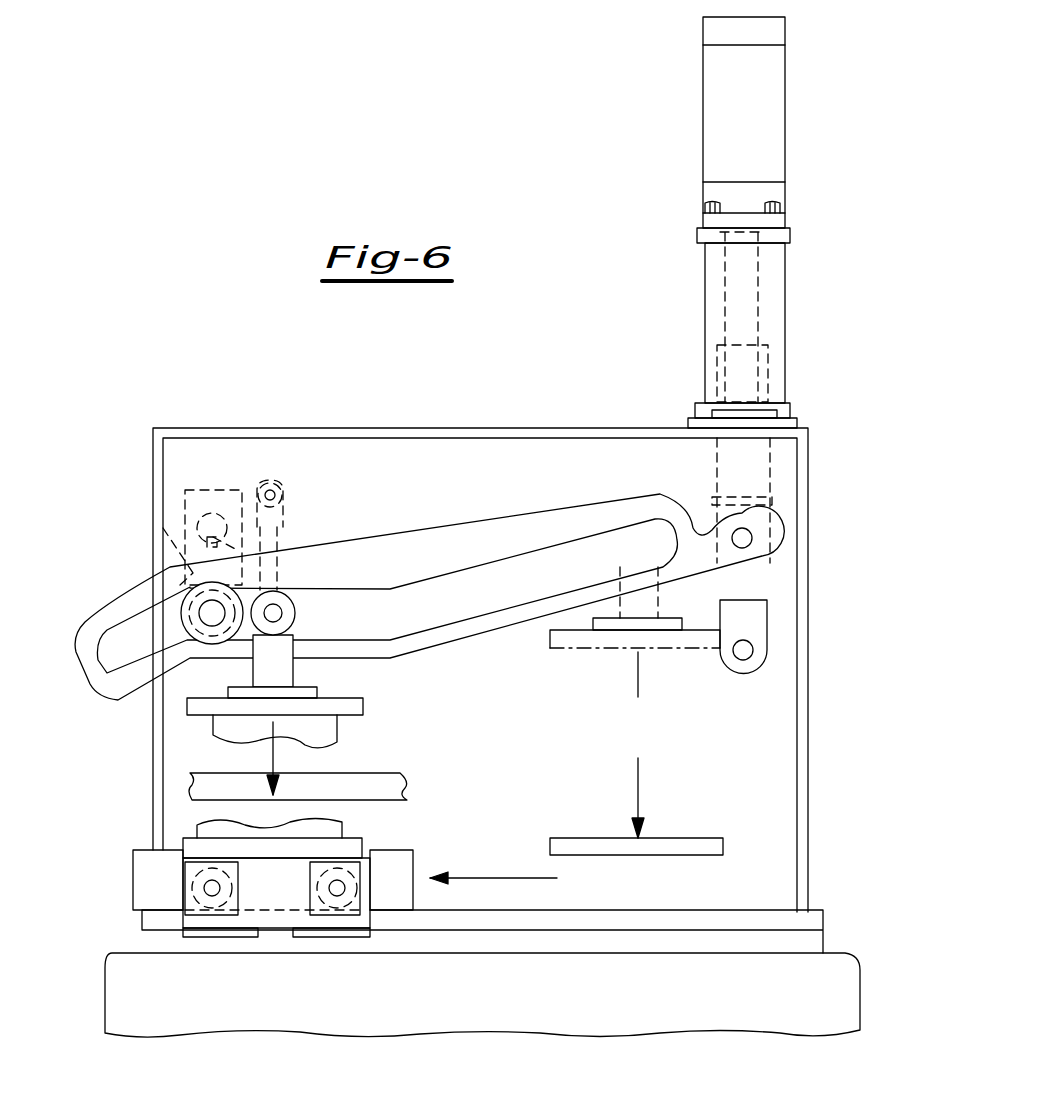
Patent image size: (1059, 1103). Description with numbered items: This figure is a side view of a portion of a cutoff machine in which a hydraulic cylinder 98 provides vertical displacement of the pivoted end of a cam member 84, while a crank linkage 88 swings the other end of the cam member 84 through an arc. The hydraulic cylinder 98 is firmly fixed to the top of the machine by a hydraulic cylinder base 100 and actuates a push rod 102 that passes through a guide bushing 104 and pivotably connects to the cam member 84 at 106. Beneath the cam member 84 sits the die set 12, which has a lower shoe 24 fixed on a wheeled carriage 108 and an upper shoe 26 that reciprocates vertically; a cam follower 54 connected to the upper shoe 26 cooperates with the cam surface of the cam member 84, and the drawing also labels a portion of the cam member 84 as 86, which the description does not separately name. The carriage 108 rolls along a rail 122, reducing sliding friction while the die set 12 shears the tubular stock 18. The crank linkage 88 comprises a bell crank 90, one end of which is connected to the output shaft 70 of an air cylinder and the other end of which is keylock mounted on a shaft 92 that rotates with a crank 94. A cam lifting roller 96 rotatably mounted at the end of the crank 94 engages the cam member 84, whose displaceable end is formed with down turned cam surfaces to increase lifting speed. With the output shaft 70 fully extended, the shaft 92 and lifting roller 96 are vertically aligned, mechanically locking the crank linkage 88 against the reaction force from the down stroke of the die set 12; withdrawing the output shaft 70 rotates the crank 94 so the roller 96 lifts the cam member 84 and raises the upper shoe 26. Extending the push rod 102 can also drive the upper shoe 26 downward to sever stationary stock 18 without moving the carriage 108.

The die set 12 is at (345, 736).
The tubular stock 18 is at (407, 786).
The lower shoe 24 is at (187, 848).
The upper shoe 26 is at (187, 703).
The cam follower 54 is at (296, 612).
The output shaft 70 is at (290, 530).
The cam member 84 is at (87, 677).
The lever cutout 86 is at (137, 663).
The crank linkage 88 is at (203, 481).
The bell crank 90 is at (280, 478).
The shaft 92 is at (187, 516).
The crank 94 is at (212, 533).
The cam lifting roller 96 is at (182, 603).
The hydraulic cylinder 98 is at (797, 150).
The hydraulic cylinder base 100 is at (866, 350).
The push rod 102 is at (758, 285).
The guide bushing 104 is at (772, 386).
The pivotable connection 106 is at (752, 539).
The carriage 108 is at (365, 858).
The rail 122 is at (560, 920).